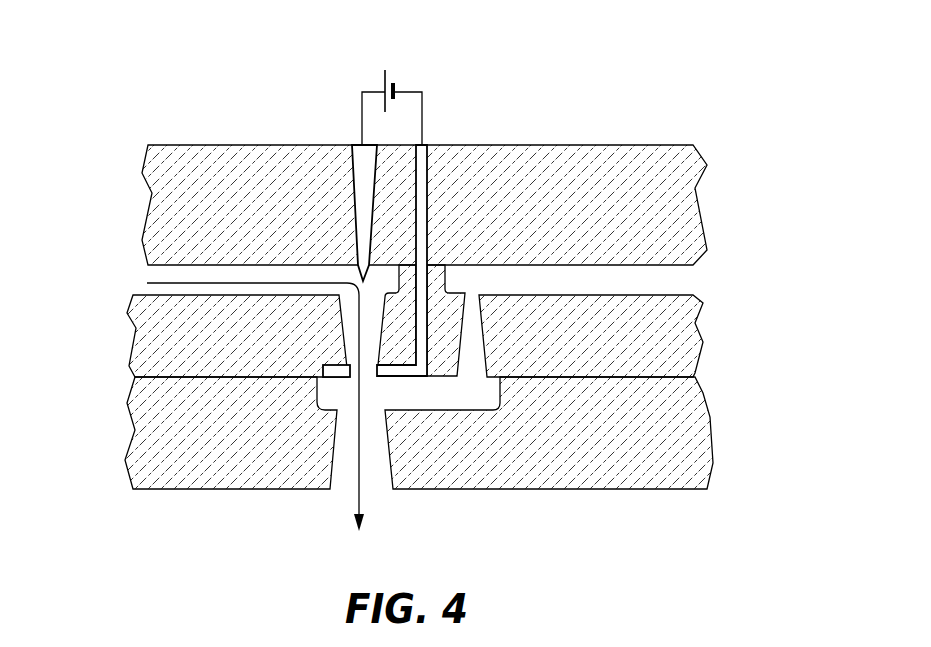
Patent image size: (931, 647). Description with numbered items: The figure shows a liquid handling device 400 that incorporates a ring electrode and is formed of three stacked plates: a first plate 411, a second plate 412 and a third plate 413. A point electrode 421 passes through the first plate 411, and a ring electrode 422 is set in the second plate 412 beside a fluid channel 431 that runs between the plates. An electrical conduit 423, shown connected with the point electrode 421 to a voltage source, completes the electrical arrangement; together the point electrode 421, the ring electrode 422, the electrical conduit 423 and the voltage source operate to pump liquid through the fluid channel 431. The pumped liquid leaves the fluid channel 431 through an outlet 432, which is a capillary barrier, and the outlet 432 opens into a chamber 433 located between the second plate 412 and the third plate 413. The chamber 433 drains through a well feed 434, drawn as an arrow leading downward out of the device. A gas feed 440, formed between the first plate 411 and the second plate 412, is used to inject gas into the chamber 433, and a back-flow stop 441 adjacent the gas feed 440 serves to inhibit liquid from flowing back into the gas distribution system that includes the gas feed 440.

The liquid handling device 400 is at (473, 108).
The first plate 411 is at (692, 205).
The second plate 412 is at (693, 335).
The third plate 413 is at (687, 427).
The point electrode 421 is at (357, 188).
The ring electrode 422 is at (330, 365).
The electrical conduit 423 is at (422, 205).
The fluid channel 431 is at (225, 273).
The outlet 432 is at (372, 385).
The chamber 433 is at (340, 397).
The well feed 434 is at (343, 478).
The gas feed 440 is at (555, 282).
The back-flow stop 441 is at (474, 314).